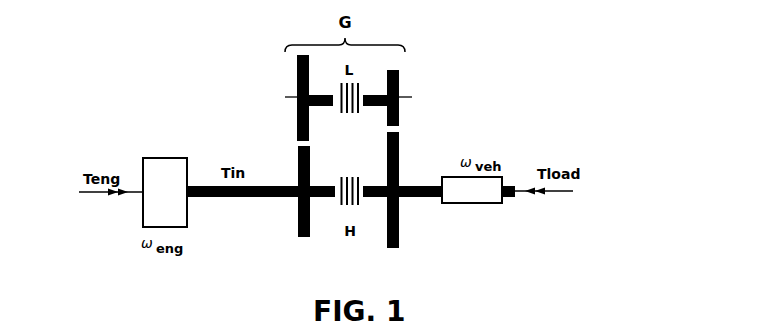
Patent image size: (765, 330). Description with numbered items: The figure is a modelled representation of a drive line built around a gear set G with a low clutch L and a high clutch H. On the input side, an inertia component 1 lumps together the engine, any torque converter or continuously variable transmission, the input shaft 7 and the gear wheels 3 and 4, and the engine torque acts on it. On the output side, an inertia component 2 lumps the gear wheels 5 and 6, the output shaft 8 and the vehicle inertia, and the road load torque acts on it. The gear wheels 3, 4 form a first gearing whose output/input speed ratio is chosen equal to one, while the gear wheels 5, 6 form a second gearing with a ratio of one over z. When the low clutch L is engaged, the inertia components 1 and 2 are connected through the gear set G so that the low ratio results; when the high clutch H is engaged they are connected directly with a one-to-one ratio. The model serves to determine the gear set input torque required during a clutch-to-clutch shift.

The inertia component 1 is at (165, 192).
The inertia component 2 is at (472, 190).
The gear wheel 3 is at (298, 218).
The gear wheel 4 is at (297, 90).
The gear wheel 5 is at (399, 87).
The gear wheel 6 is at (400, 220).
The input shaft 7 is at (253, 199).
The output shaft 8 is at (402, 188).